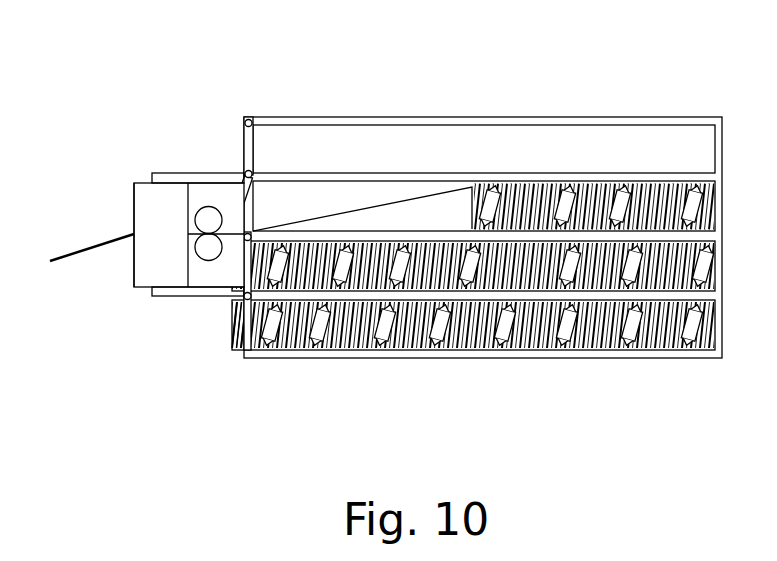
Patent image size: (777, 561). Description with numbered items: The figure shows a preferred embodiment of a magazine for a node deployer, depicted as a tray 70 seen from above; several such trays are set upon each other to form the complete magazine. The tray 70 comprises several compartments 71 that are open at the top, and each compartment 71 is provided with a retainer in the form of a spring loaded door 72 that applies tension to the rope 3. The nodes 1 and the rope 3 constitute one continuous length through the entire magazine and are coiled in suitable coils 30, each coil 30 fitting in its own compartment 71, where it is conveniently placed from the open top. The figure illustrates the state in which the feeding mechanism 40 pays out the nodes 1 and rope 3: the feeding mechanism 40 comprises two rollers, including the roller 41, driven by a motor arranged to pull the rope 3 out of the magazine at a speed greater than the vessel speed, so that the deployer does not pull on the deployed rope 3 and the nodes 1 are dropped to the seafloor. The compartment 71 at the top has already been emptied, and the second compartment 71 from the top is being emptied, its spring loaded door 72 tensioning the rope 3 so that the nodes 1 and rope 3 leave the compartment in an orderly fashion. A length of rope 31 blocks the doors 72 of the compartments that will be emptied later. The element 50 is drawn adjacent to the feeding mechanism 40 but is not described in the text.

The tray 70 is at (447, 104).
The compartment 71 is at (549, 147).
The spring loaded door 72 is at (249, 143).
The feeding mechanism 40 is at (148, 255).
The roller 41 is at (130, 275).
The guide rail 50 is at (177, 293).
The length of rope 31 is at (237, 333).
The node 1 is at (378, 345).
The coil 30 is at (473, 312).
The rope 3 is at (67, 248).